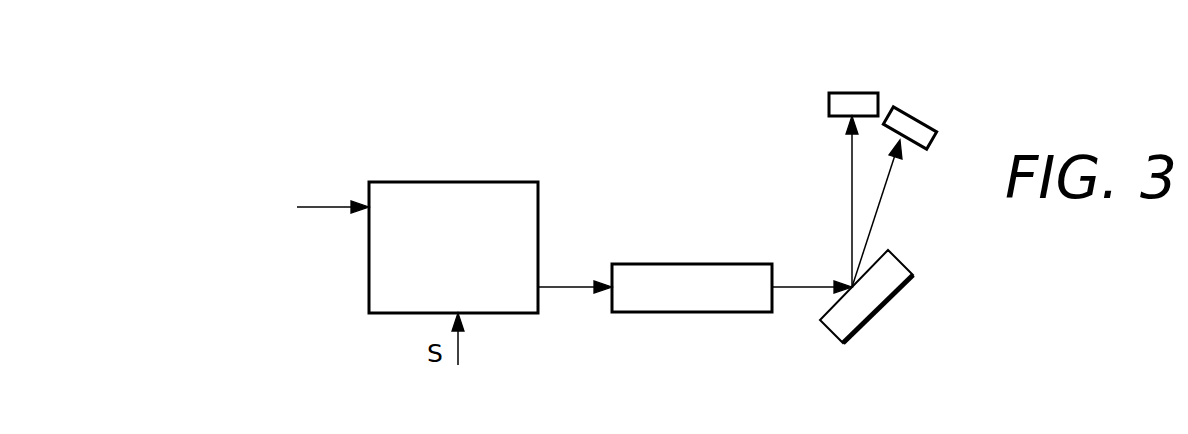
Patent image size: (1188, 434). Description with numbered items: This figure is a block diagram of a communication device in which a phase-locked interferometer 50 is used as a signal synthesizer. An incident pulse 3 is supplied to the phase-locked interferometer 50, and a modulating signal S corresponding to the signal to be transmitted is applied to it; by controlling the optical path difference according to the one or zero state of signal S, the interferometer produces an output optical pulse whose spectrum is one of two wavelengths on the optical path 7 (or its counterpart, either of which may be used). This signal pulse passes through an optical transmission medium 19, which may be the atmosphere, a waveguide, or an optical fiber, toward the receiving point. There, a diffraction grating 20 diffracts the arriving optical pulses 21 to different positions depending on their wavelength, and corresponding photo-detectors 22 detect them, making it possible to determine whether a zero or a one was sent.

The incident pulse 3 is at (313, 210).
The phase-locked interferometer 50 is at (497, 182).
The optical path 7 is at (597, 253).
The optical transmission medium 19 is at (757, 264).
The diffraction grating 20 is at (885, 307).
The diffracted optical pulses 21 is at (870, 222).
The photo-detectors 22 is at (907, 107).